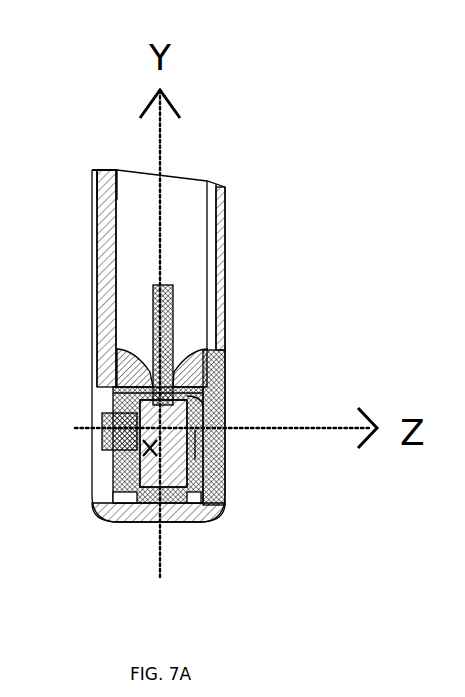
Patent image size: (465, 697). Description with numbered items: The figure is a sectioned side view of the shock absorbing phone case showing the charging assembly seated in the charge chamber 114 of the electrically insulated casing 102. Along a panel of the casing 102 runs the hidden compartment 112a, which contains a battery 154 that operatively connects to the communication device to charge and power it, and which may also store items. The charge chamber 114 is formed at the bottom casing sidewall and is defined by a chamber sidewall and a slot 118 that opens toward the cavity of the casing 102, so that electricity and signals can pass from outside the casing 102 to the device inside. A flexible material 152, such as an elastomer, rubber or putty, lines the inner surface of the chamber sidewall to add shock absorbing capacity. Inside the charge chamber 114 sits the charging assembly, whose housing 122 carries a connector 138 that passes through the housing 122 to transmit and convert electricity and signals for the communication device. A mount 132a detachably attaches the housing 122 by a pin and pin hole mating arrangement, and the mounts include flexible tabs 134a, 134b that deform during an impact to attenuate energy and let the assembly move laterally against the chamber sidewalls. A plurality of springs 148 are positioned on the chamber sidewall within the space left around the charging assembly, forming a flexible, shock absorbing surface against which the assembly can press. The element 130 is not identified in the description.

The casing 102 is at (227, 232).
The hidden compartment 112a is at (92, 182).
The battery 154 is at (102, 273).
The flexible material 152 is at (222, 378).
The connector 138 is at (173, 303).
The slot 118 is at (225, 363).
The inner housing 130 is at (115, 410).
The mount 132a is at (190, 402).
The springs 148 is at (100, 457).
The flexible tab 134a is at (112, 473).
The flexible tab 134b is at (200, 440).
The housing 122 is at (200, 460).
The charge chamber 114 is at (223, 490).